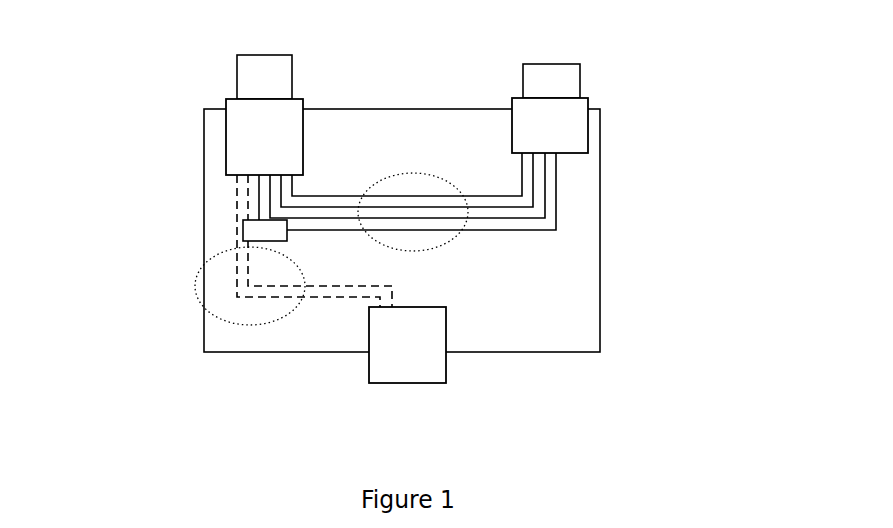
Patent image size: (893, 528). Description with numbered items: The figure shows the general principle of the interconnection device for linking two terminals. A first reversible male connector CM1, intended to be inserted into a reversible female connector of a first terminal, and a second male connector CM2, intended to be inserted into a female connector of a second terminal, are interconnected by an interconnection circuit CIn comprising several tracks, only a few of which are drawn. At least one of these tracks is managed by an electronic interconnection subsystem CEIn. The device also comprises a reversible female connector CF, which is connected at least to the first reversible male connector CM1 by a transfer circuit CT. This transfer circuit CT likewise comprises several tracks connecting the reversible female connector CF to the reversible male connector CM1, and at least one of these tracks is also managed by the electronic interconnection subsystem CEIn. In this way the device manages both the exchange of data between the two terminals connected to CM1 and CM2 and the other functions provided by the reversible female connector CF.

The first reversible male connector CM1 is at (192, 128).
The second male connector CM2 is at (624, 114).
The interconnection circuit CIn is at (417, 163).
The electronic interconnection subsystem CEIn is at (245, 230).
The transfer circuit CT is at (189, 312).
The reversible female connector CF is at (459, 346).